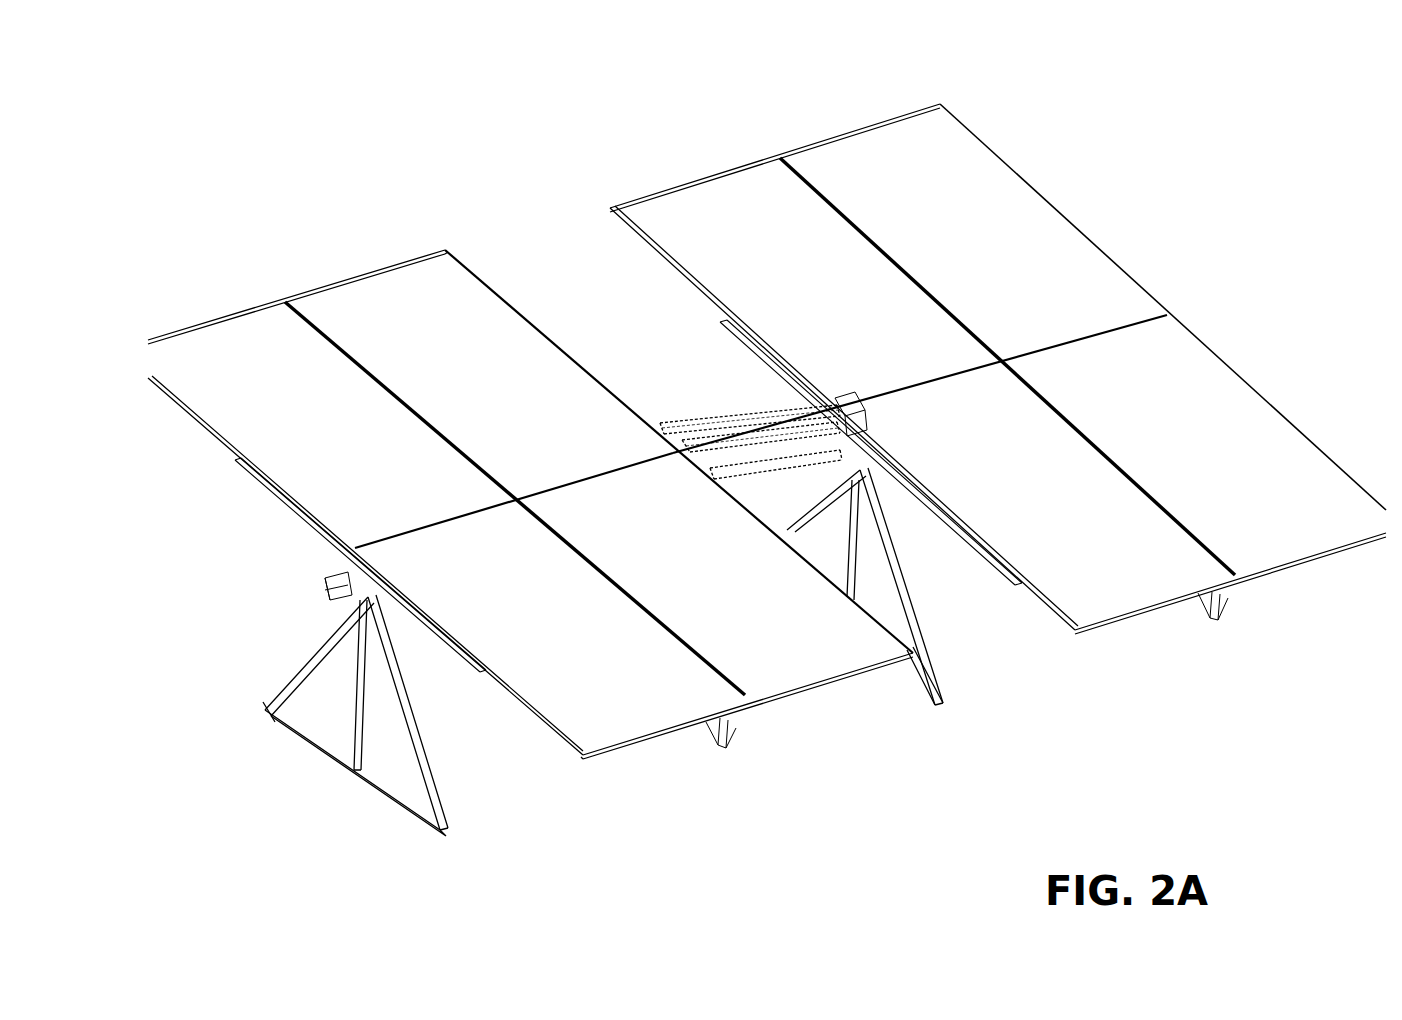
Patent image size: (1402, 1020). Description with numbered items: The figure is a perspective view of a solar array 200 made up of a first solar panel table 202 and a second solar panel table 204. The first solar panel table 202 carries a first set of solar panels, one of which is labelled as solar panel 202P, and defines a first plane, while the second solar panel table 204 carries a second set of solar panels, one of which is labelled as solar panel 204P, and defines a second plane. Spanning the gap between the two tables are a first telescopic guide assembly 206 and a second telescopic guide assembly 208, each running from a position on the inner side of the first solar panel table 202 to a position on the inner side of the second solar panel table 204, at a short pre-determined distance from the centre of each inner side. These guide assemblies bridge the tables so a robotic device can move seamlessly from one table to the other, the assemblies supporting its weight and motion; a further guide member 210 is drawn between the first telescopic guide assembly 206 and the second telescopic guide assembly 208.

The solar array 200 is at (1260, 86).
The first solar panel table 202 is at (1105, 617).
The solar panel of first array 202P is at (873, 161).
The second solar panel table 204 is at (787, 690).
The solar panel of second array 204P is at (433, 287).
The first telescopic guide assembly 206 is at (734, 402).
The second telescopic guide assembly 208 is at (746, 480).
The middle rail 210 is at (785, 436).